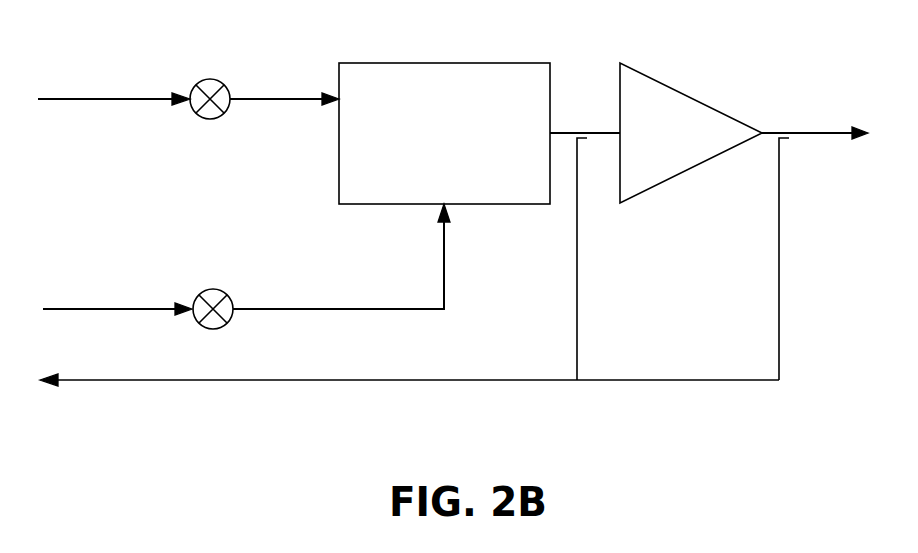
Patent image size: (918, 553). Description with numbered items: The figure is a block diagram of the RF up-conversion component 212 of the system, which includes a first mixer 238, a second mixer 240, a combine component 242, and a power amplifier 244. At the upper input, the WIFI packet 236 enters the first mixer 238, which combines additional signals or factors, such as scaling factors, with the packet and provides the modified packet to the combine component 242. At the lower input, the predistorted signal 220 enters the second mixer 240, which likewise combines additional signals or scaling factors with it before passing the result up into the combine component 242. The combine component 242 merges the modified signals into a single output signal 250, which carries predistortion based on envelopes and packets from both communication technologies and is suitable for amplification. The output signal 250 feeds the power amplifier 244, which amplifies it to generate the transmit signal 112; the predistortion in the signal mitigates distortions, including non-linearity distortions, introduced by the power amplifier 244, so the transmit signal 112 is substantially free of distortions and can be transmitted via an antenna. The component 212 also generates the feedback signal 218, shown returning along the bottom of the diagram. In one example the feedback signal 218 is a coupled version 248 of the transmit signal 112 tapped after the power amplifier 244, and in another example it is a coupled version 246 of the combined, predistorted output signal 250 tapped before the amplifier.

The transmit signal 112 is at (833, 130).
The RF up-conversion component 212 is at (299, 460).
The feedback signal 218 is at (225, 382).
The predistorted signal 220 is at (115, 308).
The WIFI packet 236 is at (112, 98).
The first mixer 238 is at (224, 114).
The second mixer 240 is at (227, 323).
The combine component 242 is at (444, 133).
The power amplifier 244 is at (654, 79).
The coupled version of the combined predistorted signal 246 is at (577, 285).
The coupled version of the transmit signal 248 is at (779, 285).
The output signal 250 is at (555, 130).